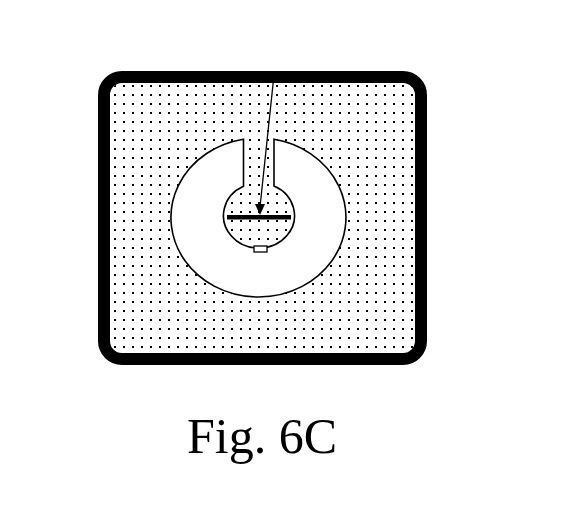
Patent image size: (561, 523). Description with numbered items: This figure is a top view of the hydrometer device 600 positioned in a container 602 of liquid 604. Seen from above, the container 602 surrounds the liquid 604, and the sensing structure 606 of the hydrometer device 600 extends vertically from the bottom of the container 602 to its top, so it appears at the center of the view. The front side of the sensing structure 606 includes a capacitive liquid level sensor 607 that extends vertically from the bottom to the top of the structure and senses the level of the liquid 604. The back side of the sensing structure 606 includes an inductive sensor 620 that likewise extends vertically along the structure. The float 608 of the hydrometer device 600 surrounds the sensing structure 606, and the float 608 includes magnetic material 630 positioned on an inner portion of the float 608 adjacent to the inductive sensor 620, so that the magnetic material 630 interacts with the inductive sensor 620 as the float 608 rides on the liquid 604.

The hydrometer device 600 is at (268, 189).
The container 602 is at (372, 72).
The liquid 604 is at (372, 293).
The sensing structure 606 is at (274, 75).
The capacitive liquid level sensor 607 is at (270, 215).
The float 608 is at (308, 146).
The inductive sensor 620 is at (290, 222).
The magnetic material 630 is at (254, 246).